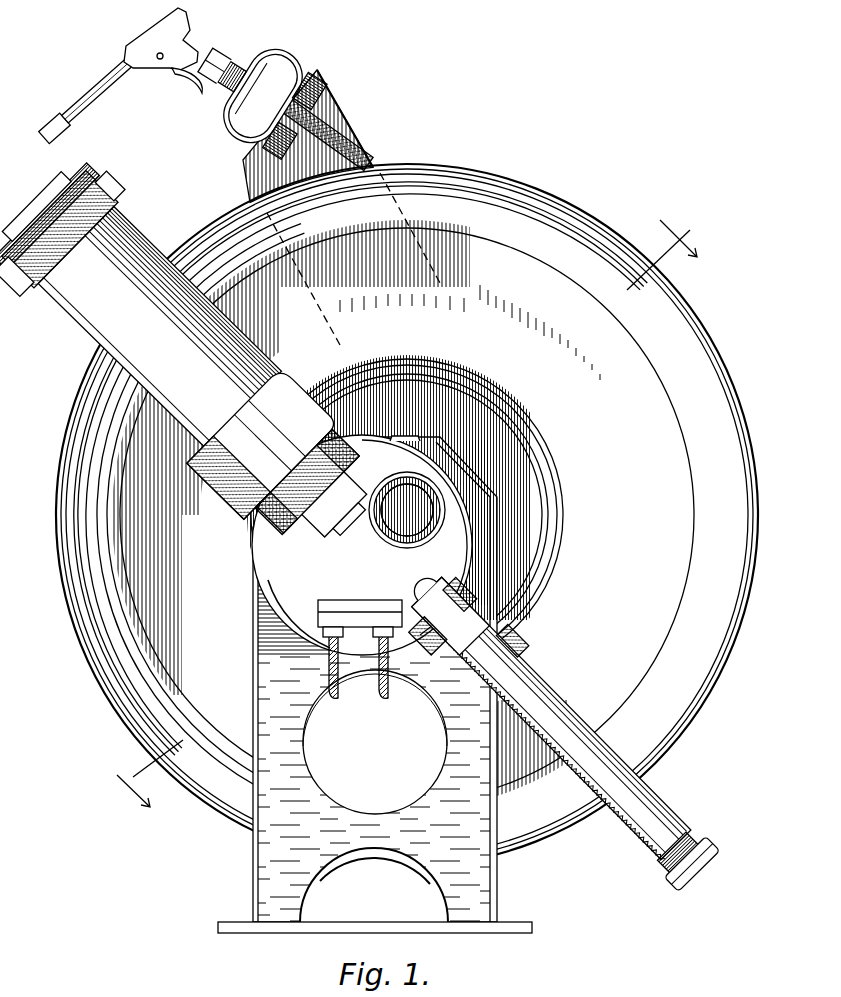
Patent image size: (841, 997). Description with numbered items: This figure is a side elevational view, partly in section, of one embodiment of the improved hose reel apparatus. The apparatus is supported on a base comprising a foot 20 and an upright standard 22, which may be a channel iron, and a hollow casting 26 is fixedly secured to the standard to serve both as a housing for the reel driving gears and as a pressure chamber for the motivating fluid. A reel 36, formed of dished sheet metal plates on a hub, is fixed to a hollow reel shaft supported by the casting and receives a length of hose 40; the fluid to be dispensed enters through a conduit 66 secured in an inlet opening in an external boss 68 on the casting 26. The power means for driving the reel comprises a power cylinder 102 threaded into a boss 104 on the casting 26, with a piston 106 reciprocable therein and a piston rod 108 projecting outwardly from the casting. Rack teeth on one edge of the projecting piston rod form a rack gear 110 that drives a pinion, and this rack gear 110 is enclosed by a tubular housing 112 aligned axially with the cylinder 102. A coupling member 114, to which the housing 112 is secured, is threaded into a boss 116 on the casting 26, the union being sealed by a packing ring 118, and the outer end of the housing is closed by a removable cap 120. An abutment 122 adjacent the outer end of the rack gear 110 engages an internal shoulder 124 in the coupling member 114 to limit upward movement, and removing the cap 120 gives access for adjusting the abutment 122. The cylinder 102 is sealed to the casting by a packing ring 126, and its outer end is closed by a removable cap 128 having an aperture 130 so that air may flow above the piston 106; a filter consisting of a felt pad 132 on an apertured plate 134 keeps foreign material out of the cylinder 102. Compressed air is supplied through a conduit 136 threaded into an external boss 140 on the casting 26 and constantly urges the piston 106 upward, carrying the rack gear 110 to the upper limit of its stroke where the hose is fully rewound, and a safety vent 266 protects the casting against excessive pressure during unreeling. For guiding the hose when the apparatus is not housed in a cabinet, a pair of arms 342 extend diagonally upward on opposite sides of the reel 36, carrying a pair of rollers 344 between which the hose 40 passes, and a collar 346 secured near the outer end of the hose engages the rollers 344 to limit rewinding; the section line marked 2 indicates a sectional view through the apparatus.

The foot 20 is at (420, 935).
The upright standard 22 is at (475, 893).
The hollow casting 26 is at (440, 475).
The reel 36 is at (566, 228).
The hose 40 is at (368, 150).
The conduit 66 is at (380, 690).
The external boss 68 is at (372, 600).
The power cylinder 102 is at (158, 248).
The boss 104 is at (330, 445).
The piston 106 is at (335, 395).
The piston rod 108 is at (352, 520).
The rack gear 110 is at (655, 825).
The tubular housing 112 is at (565, 690).
The coupling member 114 is at (490, 608).
The boss 116 is at (455, 588).
The packing ring 118 is at (485, 596).
The removable cap 120 is at (695, 870).
The abutment 122 is at (690, 845).
The internal shoulder 124 is at (490, 640).
The packing ring 126 is at (262, 515).
The removable cap 128 is at (37, 222).
The aperture 130 is at (57, 205).
The felt pad 132 is at (37, 292).
The apertured plate 134 is at (108, 208).
The conduit 136 is at (330, 694).
The external boss 140 is at (268, 614).
The safety vent 266 is at (403, 438).
The arms 342 is at (440, 283).
The rollers 344 is at (322, 96).
The collar 346 is at (278, 62).
The section line 2 is at (407, 507).